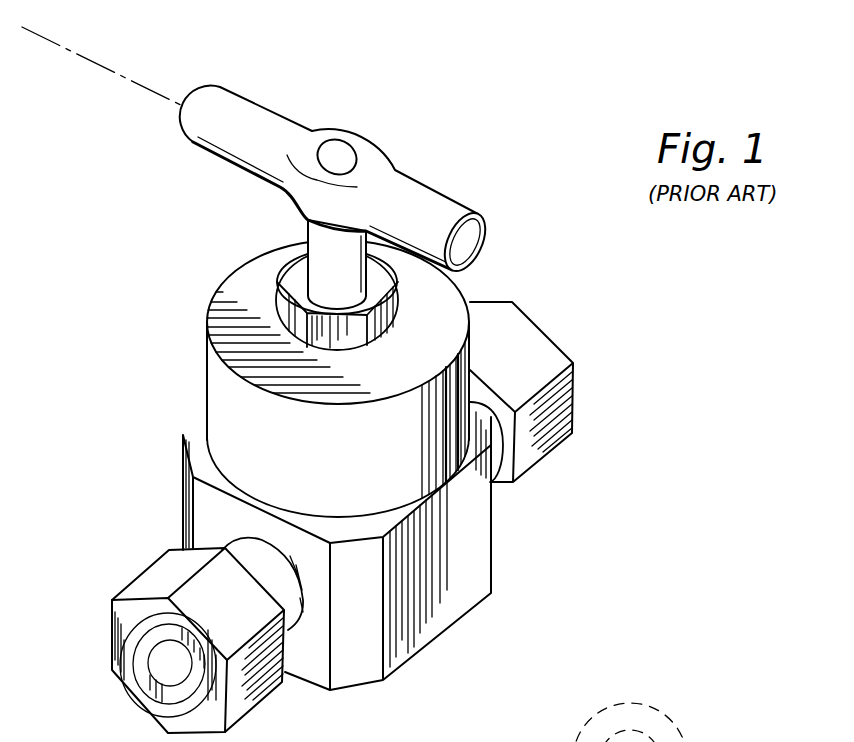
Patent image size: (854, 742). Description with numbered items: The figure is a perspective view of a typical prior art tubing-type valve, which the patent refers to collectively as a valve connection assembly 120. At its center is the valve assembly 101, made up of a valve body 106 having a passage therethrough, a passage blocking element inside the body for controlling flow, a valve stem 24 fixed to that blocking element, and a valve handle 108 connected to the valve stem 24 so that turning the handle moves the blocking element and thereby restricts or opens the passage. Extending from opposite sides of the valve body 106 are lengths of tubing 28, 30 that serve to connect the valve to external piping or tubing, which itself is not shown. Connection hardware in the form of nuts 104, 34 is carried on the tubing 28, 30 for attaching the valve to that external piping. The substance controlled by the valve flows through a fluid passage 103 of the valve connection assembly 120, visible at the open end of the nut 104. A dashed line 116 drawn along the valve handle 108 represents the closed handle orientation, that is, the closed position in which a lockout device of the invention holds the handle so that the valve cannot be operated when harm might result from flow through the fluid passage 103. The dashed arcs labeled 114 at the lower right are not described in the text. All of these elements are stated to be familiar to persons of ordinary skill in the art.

The closed position 116 is at (105, 67).
The valve connection assembly 120 is at (137, 205).
The valve stem 24 is at (306, 222).
The valve assembly 101 is at (264, 273).
The valve handle 108 is at (427, 183).
The connection nut 34 is at (537, 340).
The tubing 28 is at (493, 428).
The valve body 106 is at (480, 560).
The tubing 30 is at (252, 560).
The connection nut 104 is at (172, 640).
The fluid passage 103 is at (170, 665).
The tubing 114 is at (637, 703).